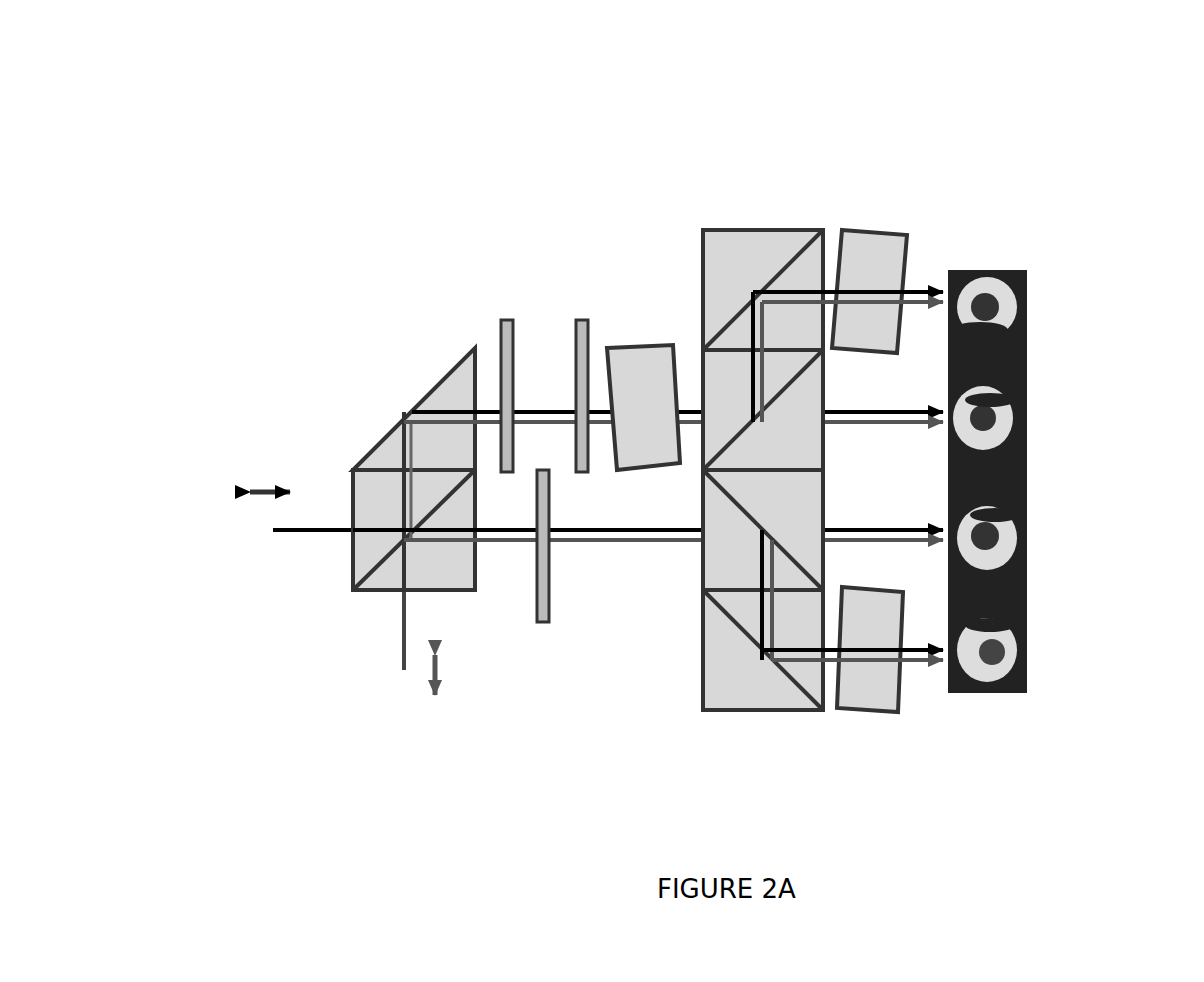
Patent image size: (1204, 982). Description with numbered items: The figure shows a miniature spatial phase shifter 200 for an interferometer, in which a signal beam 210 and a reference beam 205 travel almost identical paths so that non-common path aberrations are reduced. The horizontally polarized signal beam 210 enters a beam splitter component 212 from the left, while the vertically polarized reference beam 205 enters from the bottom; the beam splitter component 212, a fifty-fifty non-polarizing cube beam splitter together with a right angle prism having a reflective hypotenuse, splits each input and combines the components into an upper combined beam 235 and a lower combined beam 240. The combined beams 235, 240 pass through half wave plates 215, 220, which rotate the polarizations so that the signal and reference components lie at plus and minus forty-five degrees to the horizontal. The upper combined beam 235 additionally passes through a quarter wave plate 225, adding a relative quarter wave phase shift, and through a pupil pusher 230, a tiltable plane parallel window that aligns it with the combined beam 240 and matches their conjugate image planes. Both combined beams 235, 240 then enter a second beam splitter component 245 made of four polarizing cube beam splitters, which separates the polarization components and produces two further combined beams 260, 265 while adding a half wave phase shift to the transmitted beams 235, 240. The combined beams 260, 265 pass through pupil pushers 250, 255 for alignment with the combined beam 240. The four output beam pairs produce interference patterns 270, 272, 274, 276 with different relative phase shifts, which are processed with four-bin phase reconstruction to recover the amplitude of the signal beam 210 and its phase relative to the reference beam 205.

The miniature spatial phase shifter 200 is at (227, 133).
The reference beam 205 is at (356, 662).
The signal beam 210 is at (268, 544).
The beam splitter component 212 is at (358, 423).
The half wave plate 215 is at (478, 352).
The half wave plate 220 is at (531, 589).
The quarter wave plate 225 is at (583, 352).
The pupil pusher 230 is at (643, 407).
The combined beam 235 is at (630, 424).
The combined beam 240 is at (677, 542).
The second beam splitter component 245 is at (718, 225).
The pupil pusher 250 is at (869, 291).
The pupil pusher 255 is at (870, 649).
The combined beam 260 is at (928, 282).
The combined beam 265 is at (930, 660).
The interference pattern 270 is at (1053, 307).
The interference pattern 272 is at (1076, 418).
The interference pattern 274 is at (1072, 538).
The interference pattern 276 is at (1072, 650).